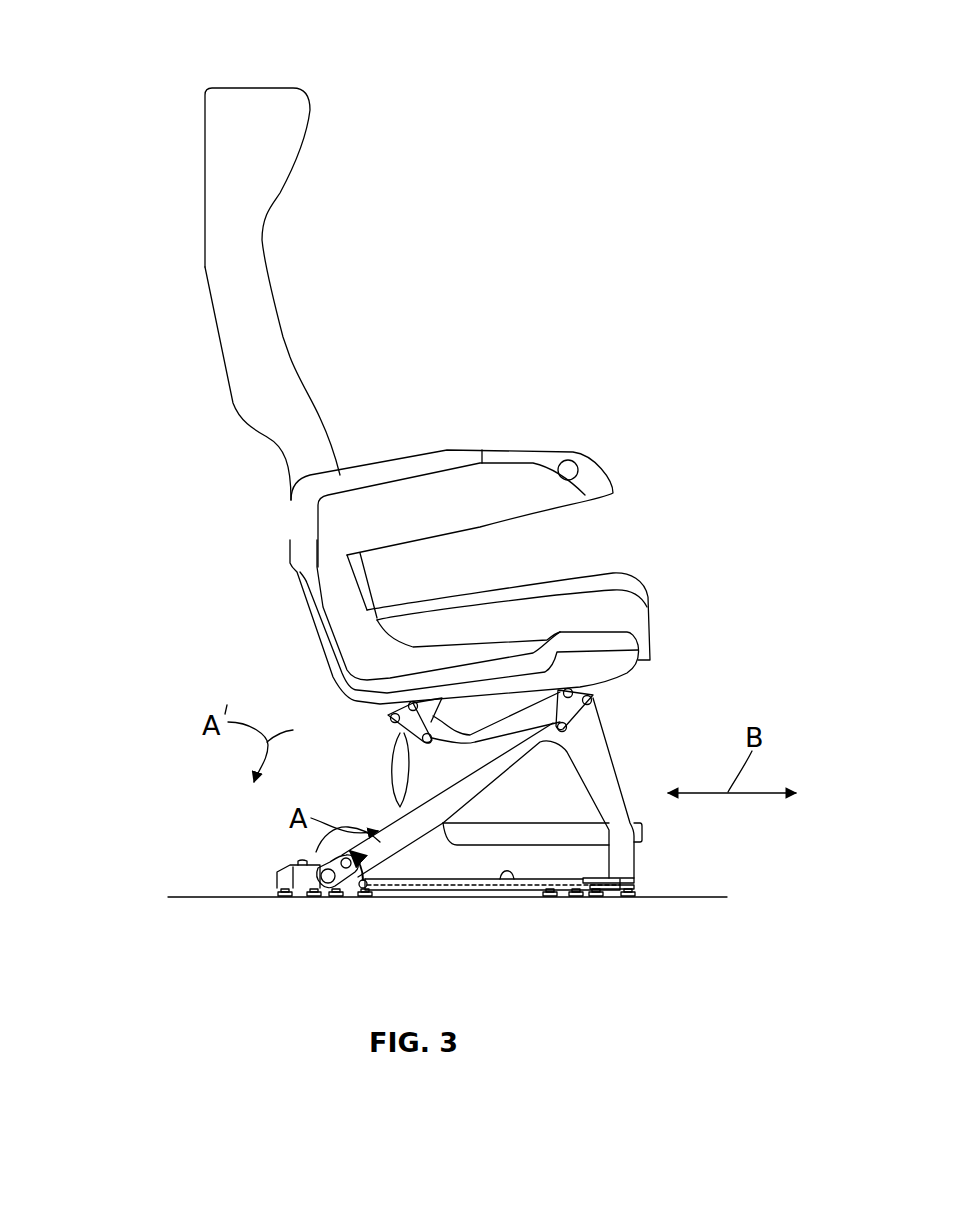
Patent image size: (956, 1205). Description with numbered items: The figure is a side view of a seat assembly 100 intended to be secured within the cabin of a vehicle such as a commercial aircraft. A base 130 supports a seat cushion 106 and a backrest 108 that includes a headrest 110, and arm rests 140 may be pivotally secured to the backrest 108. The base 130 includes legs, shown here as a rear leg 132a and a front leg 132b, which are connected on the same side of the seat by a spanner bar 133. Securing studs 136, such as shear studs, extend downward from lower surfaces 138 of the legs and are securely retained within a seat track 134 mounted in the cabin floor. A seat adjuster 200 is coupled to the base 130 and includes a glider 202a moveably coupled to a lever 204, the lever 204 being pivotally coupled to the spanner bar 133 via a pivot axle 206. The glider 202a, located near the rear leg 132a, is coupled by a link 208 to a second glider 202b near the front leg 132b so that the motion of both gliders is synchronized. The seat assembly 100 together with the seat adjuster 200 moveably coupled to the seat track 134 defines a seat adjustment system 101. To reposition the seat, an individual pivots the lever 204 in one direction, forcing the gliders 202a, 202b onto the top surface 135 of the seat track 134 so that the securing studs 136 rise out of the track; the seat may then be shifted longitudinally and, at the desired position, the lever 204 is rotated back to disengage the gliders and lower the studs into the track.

The seat assembly 100 is at (188, 88).
The seat adjustment system 101 is at (165, 471).
The seat cushion 106 is at (640, 575).
The backrest 108 is at (205, 226).
The headrest 110 is at (276, 203).
The base 130 is at (387, 805).
The rear leg 132a is at (275, 885).
The front leg 132b is at (637, 858).
The spanner bar 133 is at (517, 880).
The seat track 134 is at (352, 893).
The top surface 135 is at (197, 896).
The securing studs 136 is at (283, 900).
The lower surfaces 138 is at (293, 862).
The arm rests 140 is at (517, 448).
The seat adjuster 200 is at (378, 870).
The glider 202a is at (367, 898).
The second glider 202b is at (545, 897).
The lever 204 is at (382, 852).
The pivot axle 206 is at (348, 897).
The link 208 is at (455, 891).